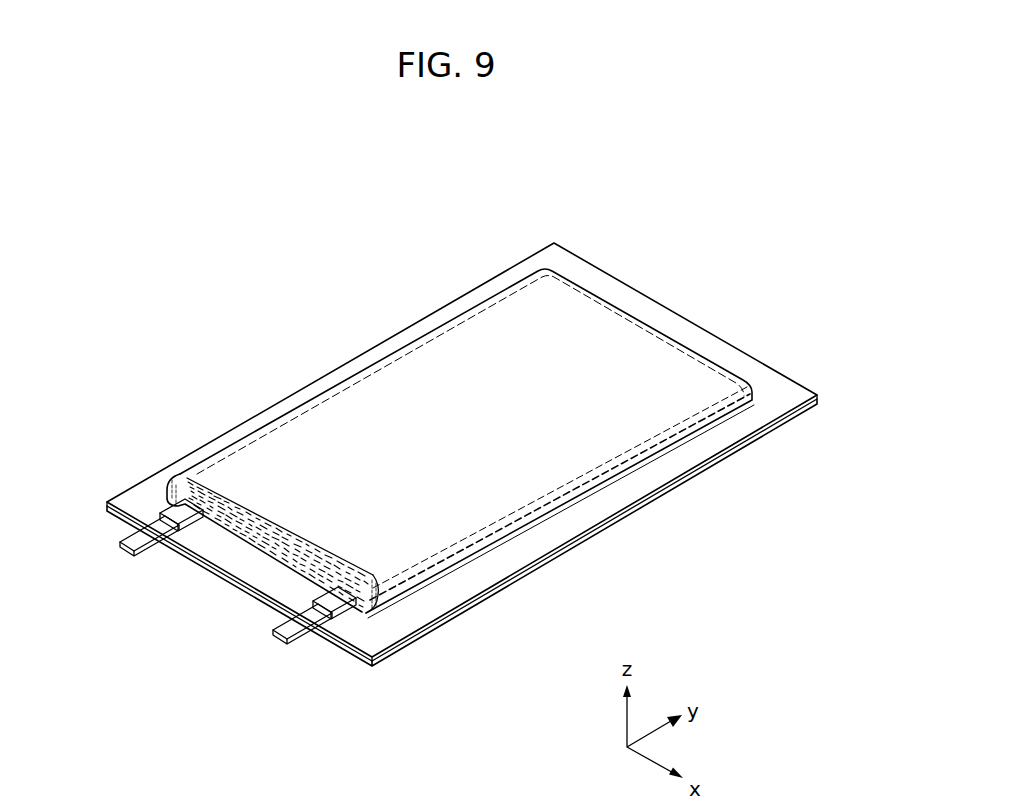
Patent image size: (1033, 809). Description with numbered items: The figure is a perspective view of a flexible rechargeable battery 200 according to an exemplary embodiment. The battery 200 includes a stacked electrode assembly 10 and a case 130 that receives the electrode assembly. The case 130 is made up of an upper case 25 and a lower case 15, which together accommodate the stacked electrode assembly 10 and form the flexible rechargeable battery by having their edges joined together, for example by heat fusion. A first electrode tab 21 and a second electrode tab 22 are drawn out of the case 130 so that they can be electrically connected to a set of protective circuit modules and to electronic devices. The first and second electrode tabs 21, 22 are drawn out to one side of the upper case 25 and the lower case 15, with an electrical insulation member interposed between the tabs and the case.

The flexible rechargeable battery 200 is at (449, 204).
The stacked electrode assembly 10 is at (416, 381).
The first electrode tab 21 is at (275, 634).
The second electrode tab 22 is at (121, 546).
The lower case 15 is at (617, 520).
The upper case 25 is at (657, 477).
The case 130 is at (462, 454).